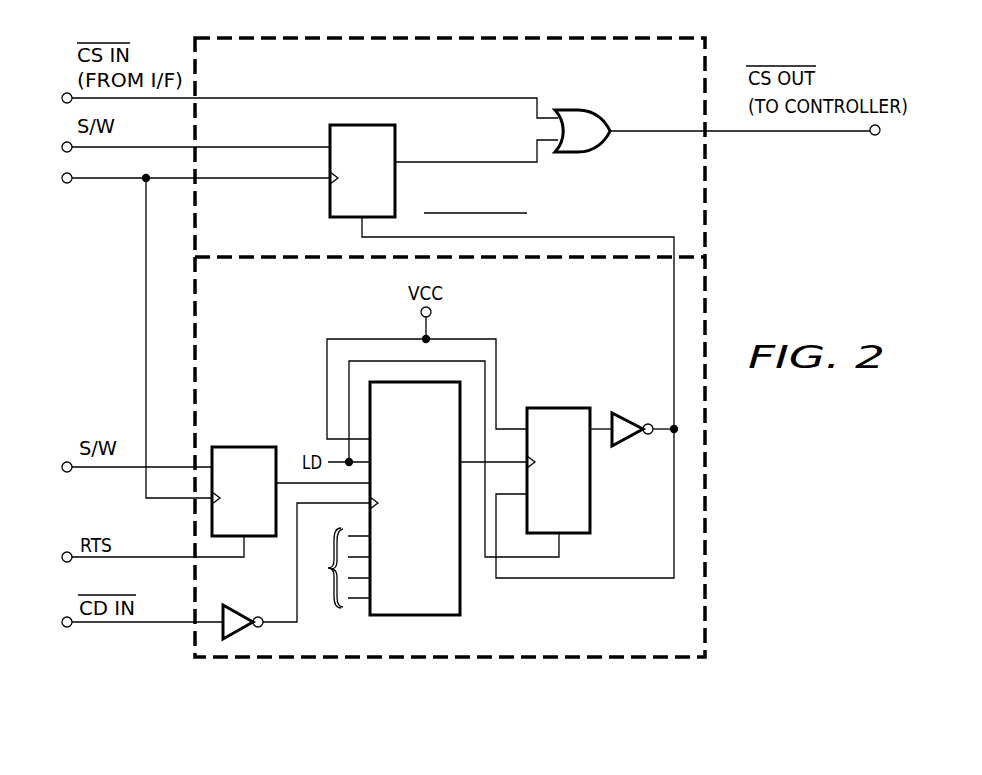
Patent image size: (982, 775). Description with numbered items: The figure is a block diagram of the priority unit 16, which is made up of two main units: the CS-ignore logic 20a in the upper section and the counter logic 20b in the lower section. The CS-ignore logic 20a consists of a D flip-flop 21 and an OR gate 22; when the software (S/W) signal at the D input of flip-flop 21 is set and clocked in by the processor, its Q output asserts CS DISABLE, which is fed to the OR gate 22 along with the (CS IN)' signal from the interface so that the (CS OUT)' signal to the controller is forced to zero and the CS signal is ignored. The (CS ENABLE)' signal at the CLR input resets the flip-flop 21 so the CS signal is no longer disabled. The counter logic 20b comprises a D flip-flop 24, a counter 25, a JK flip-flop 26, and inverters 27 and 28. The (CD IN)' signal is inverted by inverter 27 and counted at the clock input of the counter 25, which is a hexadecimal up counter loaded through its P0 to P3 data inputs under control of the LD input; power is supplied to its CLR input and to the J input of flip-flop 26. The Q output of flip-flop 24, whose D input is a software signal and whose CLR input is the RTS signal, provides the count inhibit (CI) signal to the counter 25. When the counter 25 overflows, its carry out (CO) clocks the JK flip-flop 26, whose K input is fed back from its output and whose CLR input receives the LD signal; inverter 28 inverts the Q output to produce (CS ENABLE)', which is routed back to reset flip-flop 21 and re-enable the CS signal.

The priority unit 16 is at (713, 601).
The CS-ignore logic 20a is at (249, 74).
The counter logic 20b is at (249, 294).
The D flip-flop 21 is at (330, 127).
The OR gate 22 is at (580, 110).
The D flip-flop 24 is at (243, 447).
The counter 25 is at (463, 600).
The JK flip-flop 26 is at (565, 408).
The inverter 27 is at (243, 607).
The inverter 28 is at (630, 414).